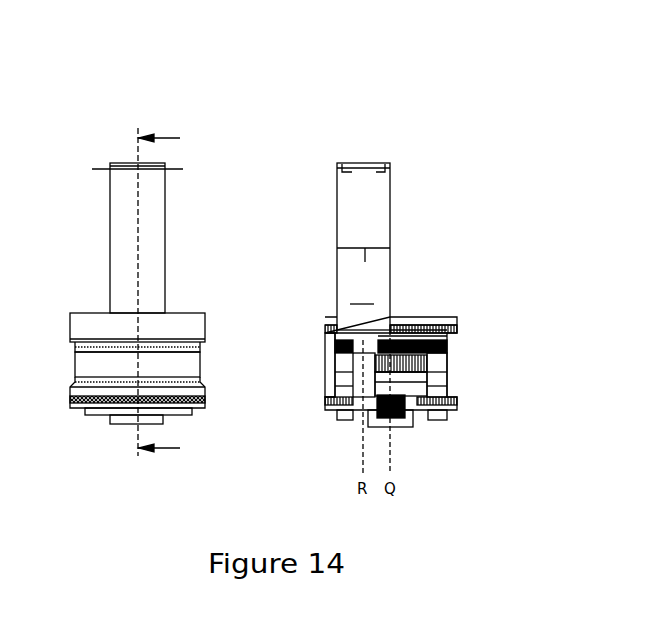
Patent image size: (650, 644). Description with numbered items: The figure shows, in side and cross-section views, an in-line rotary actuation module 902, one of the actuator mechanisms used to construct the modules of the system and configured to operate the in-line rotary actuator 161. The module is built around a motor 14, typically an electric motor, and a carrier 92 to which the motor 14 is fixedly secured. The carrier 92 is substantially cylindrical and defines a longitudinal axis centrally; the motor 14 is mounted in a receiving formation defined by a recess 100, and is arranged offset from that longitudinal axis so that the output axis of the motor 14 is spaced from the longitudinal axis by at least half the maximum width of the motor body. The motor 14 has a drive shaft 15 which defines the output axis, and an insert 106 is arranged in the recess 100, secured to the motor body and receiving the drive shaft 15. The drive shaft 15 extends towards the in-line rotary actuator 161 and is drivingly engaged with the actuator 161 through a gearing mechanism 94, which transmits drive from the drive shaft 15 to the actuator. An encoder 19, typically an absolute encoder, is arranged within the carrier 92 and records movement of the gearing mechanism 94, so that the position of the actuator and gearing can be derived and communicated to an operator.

The in-line rotary actuation module 902 is at (91, 129).
The motor 14 is at (152, 218).
The carrier 92 is at (188, 365).
The gearing mechanism 94 is at (448, 357).
The in-line rotary actuator 161 is at (185, 415).
The encoder 19 is at (412, 420).
The drive shaft 15 is at (340, 355).
The insert 106 is at (416, 334).
The recess 100 is at (438, 333).